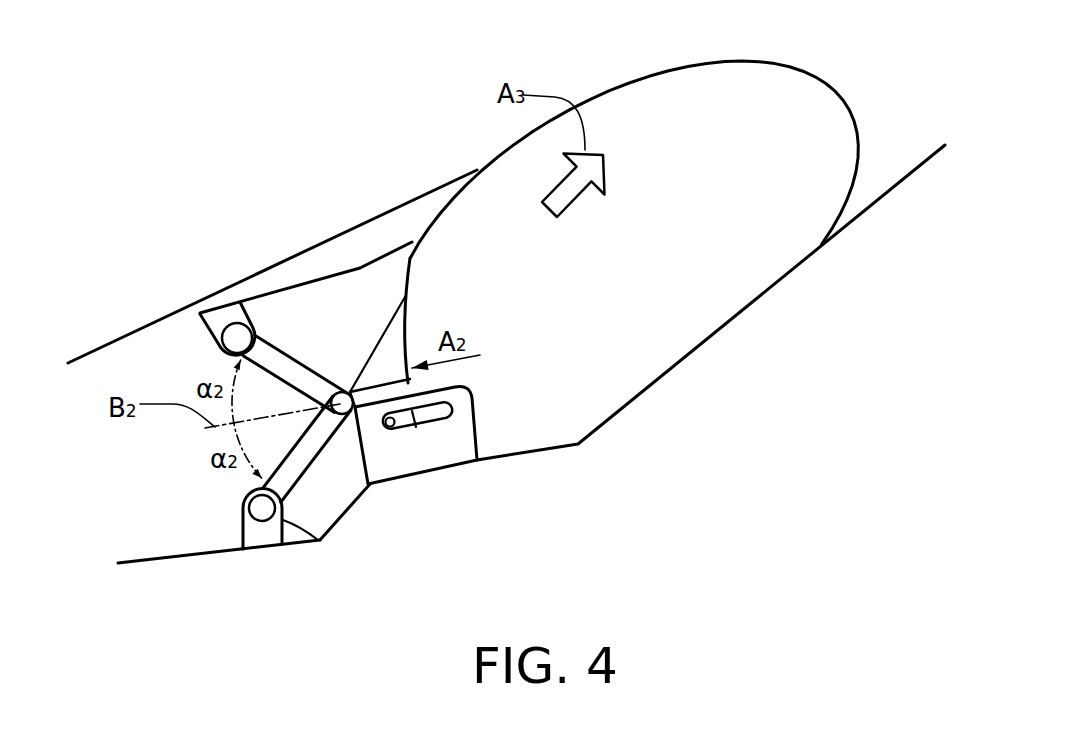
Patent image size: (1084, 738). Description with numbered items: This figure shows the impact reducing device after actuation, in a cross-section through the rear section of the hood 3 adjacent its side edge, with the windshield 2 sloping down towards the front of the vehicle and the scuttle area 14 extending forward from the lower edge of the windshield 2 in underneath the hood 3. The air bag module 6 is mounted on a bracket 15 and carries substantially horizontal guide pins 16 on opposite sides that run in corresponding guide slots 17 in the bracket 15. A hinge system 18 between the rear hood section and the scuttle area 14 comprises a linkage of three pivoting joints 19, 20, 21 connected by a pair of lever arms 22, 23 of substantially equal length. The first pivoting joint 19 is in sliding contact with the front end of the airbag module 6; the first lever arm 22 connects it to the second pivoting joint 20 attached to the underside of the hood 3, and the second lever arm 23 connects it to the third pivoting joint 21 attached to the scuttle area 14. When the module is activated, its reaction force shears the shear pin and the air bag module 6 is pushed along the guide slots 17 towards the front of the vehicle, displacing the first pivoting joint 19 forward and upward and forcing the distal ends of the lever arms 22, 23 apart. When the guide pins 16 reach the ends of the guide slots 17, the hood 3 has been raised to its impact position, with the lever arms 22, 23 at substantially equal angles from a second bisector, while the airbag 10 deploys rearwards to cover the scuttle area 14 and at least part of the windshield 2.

The windshield 2 is at (933, 147).
The hood 3 is at (143, 327).
The air bag module 6 is at (403, 303).
The airbag 10 is at (790, 220).
The scuttle area 14 is at (562, 448).
The bracket 15 is at (460, 432).
The guide pins 16 is at (391, 426).
The guide slots 17 is at (440, 423).
The hinge system 18 is at (242, 568).
The first pivoting joint 19 is at (345, 395).
The second pivoting joint 20 is at (236, 334).
The third pivoting joint 21 is at (312, 540).
The first lever arm 22 is at (287, 367).
The second lever arm 23 is at (300, 468).